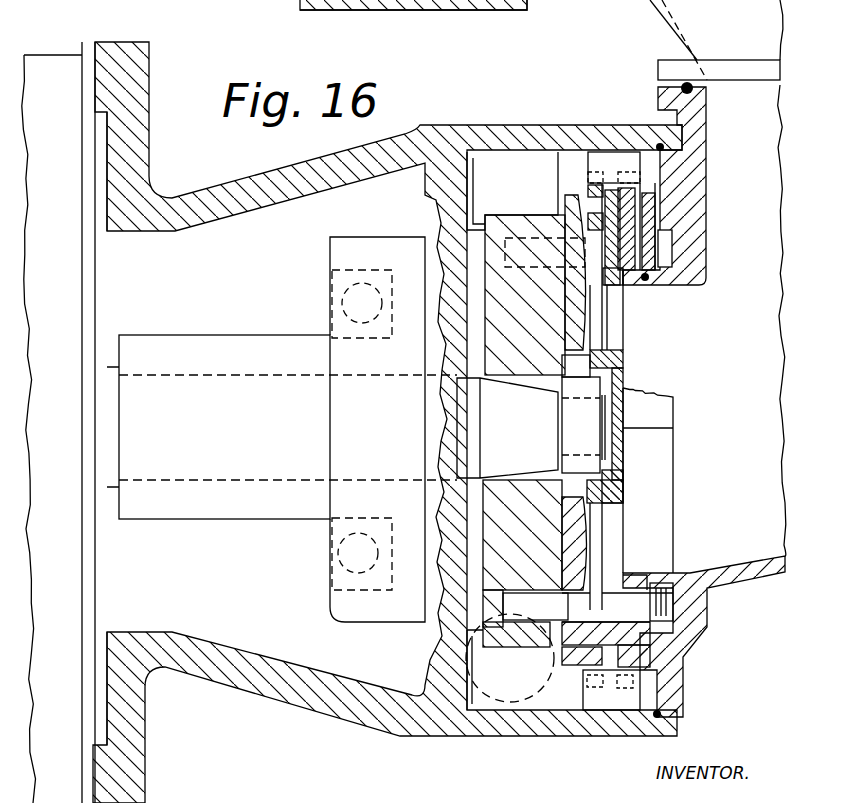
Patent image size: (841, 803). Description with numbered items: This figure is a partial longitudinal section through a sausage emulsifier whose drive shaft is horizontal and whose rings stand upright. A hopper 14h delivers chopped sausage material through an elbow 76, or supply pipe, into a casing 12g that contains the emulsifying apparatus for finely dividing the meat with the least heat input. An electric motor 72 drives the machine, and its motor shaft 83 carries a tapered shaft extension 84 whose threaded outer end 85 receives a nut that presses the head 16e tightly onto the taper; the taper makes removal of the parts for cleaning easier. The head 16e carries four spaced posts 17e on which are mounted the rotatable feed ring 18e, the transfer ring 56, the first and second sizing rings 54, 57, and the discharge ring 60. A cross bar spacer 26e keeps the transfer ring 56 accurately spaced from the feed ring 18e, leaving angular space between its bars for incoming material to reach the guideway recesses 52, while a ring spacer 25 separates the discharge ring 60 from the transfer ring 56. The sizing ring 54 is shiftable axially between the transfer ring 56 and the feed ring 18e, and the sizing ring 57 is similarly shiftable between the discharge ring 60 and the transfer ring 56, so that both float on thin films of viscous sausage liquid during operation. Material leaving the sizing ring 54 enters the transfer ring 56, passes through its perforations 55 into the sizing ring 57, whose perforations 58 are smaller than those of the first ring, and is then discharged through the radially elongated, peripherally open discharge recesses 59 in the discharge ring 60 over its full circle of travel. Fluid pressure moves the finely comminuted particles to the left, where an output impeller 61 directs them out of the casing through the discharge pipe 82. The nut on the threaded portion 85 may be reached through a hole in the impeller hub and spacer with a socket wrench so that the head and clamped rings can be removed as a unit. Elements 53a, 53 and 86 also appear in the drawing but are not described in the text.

The electric motor 72 is at (40, 62).
The casing 12g is at (534, 135).
The hopper 14h is at (703, 34).
The output impeller 61 is at (483, 168).
The bolt head 53a is at (600, 160).
The second sizing ring 57 is at (628, 183).
The first sizing ring 54 is at (590, 192).
The bolt 53 is at (595, 203).
The guideway recesses 52 is at (583, 213).
The perforations 58 is at (628, 218).
The transfer ring 56 is at (612, 290).
The motor shaft 83 is at (113, 440).
The shaft extension 84 is at (457, 403).
The threaded outer end 85 is at (605, 410).
The feed ring 18e is at (577, 520).
The cross bar spacer 26e is at (596, 538).
The ring spacer 25 is at (625, 585).
The head 16e is at (511, 561).
The spaced posts 17e is at (515, 605).
The elbow 76 is at (718, 578).
The threaded bolt 86 is at (655, 633).
The discharge ring 60 is at (652, 652).
The discharge recesses 59 is at (637, 660).
The discharge pipe 82 is at (508, 680).
The perforations 55 is at (610, 650).